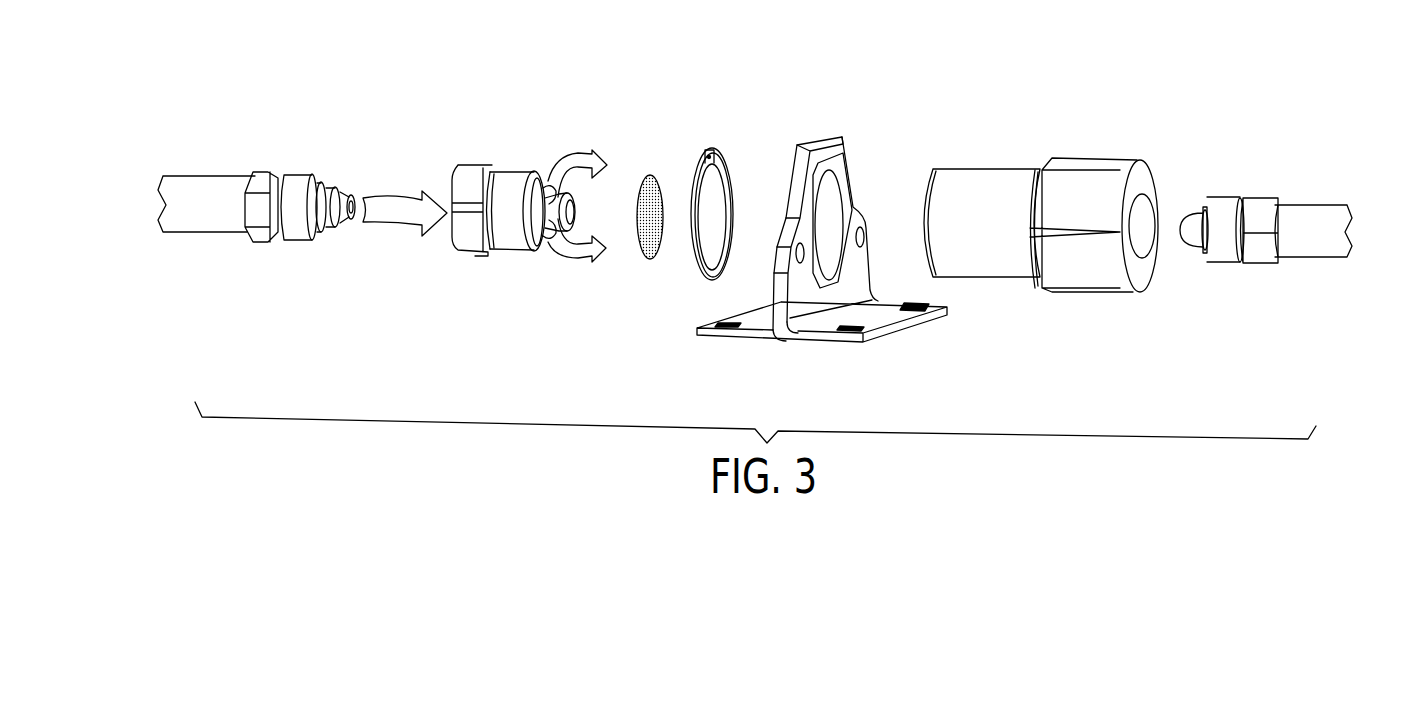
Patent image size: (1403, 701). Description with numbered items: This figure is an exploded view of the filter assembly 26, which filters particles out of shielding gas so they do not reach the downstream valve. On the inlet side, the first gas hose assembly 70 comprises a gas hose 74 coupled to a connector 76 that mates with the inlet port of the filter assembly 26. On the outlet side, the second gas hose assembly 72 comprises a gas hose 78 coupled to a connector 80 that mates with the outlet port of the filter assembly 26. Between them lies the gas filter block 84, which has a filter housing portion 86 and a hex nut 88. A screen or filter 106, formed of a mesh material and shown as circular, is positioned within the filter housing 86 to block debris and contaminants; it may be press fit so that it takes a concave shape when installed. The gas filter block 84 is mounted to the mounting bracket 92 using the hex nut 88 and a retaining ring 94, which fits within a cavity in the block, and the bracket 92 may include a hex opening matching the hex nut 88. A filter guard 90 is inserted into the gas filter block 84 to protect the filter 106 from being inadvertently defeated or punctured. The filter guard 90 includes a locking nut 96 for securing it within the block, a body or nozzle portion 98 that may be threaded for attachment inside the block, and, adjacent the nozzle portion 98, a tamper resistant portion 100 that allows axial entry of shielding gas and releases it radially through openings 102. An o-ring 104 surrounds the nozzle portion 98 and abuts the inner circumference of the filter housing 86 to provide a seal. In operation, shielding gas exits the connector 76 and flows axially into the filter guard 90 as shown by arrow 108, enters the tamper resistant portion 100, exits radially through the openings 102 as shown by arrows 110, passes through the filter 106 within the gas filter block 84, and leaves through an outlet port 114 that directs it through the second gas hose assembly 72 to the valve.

The filter assembly 26 is at (779, 36).
The first gas hose assembly 70 is at (191, 132).
The second gas hose assembly 72 is at (1283, 157).
The gas hose 74 is at (228, 198).
The connector 76 is at (297, 182).
The gas hose 78 is at (1317, 217).
The connector 80 is at (1227, 208).
The gas filter block 84 is at (1036, 112).
The filter housing portion 86 is at (985, 268).
The hex nut 88 is at (1083, 265).
The filter guard 90 is at (518, 151).
The mounting bracket 92 is at (848, 147).
The retaining ring 94 is at (728, 172).
The locking nut 96 is at (472, 170).
The nozzle portion 98 is at (510, 238).
The tamper resistant portion 100 is at (573, 210).
The openings 102 is at (543, 193).
The o-ring 104 is at (480, 221).
The filter 106 is at (657, 185).
The arrow 108 is at (390, 193).
The arrows 110 is at (575, 157).
The outlet port 114 is at (1137, 240).